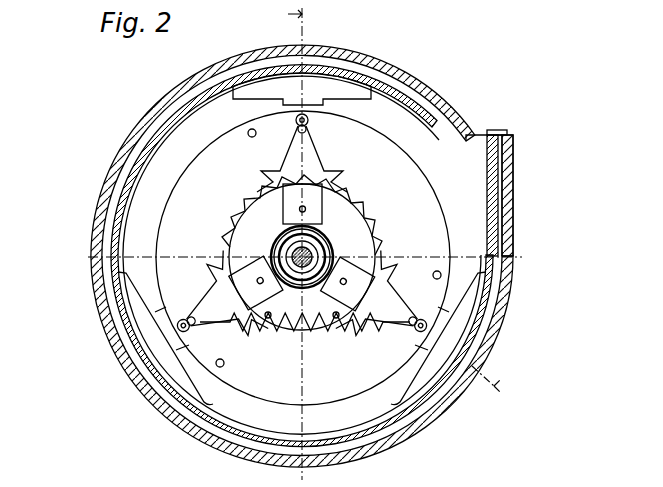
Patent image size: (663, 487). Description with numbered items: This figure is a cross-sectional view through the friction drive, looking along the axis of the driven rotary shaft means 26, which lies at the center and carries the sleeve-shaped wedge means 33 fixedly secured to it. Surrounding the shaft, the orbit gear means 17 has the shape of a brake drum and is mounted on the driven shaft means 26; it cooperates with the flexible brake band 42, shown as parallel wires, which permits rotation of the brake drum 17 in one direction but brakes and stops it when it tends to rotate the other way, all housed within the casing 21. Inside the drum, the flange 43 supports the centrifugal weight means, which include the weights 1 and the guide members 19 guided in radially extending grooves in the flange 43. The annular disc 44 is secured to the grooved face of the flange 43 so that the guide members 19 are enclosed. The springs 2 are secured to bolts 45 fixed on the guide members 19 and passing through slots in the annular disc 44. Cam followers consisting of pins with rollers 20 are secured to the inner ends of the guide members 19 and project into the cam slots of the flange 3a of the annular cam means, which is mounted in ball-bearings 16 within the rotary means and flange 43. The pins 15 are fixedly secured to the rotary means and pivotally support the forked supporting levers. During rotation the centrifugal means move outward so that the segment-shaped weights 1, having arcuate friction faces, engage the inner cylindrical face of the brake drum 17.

The weight 1 is at (345, 93).
The brake band 42 is at (500, 192).
The casing 21 is at (133, 378).
The orbit gear means 17 is at (170, 400).
The bolt 45 is at (425, 323).
The flange 43 is at (247, 383).
The pin 15 is at (441, 274).
The guide member 19 is at (283, 101).
The annular disc 44 is at (309, 126).
The spring 2 is at (278, 172).
The roller 20 is at (306, 209).
The flange of annular cam means 3a is at (262, 245).
The ball-bearing 16 is at (343, 326).
The wedge means 33 is at (296, 268).
The driven rotary shaft means 26 is at (310, 268).